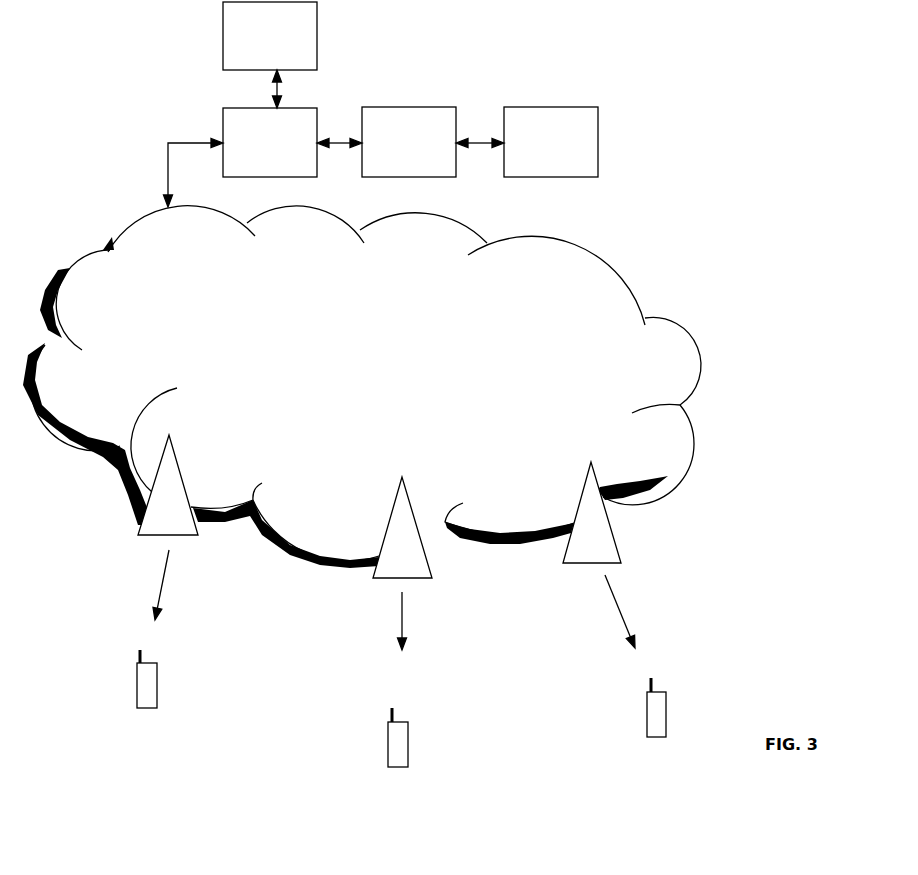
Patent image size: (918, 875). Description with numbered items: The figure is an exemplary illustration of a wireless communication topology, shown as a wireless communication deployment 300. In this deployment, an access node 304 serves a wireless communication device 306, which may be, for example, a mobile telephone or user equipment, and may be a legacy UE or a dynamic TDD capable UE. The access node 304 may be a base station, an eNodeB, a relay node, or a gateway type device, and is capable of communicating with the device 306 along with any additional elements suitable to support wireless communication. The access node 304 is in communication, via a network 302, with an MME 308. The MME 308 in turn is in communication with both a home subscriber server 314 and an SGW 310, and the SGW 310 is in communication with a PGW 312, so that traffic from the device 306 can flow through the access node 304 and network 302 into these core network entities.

The wireless communication deployment 300 is at (721, 50).
The network 302 is at (118, 283).
The access node 304 is at (133, 523).
The wireless communication device 306 is at (645, 672).
The MME 308 is at (222, 116).
The SGW 310 is at (465, 109).
The PGW 312 is at (599, 112).
The home subscriber server 314 is at (317, 43).